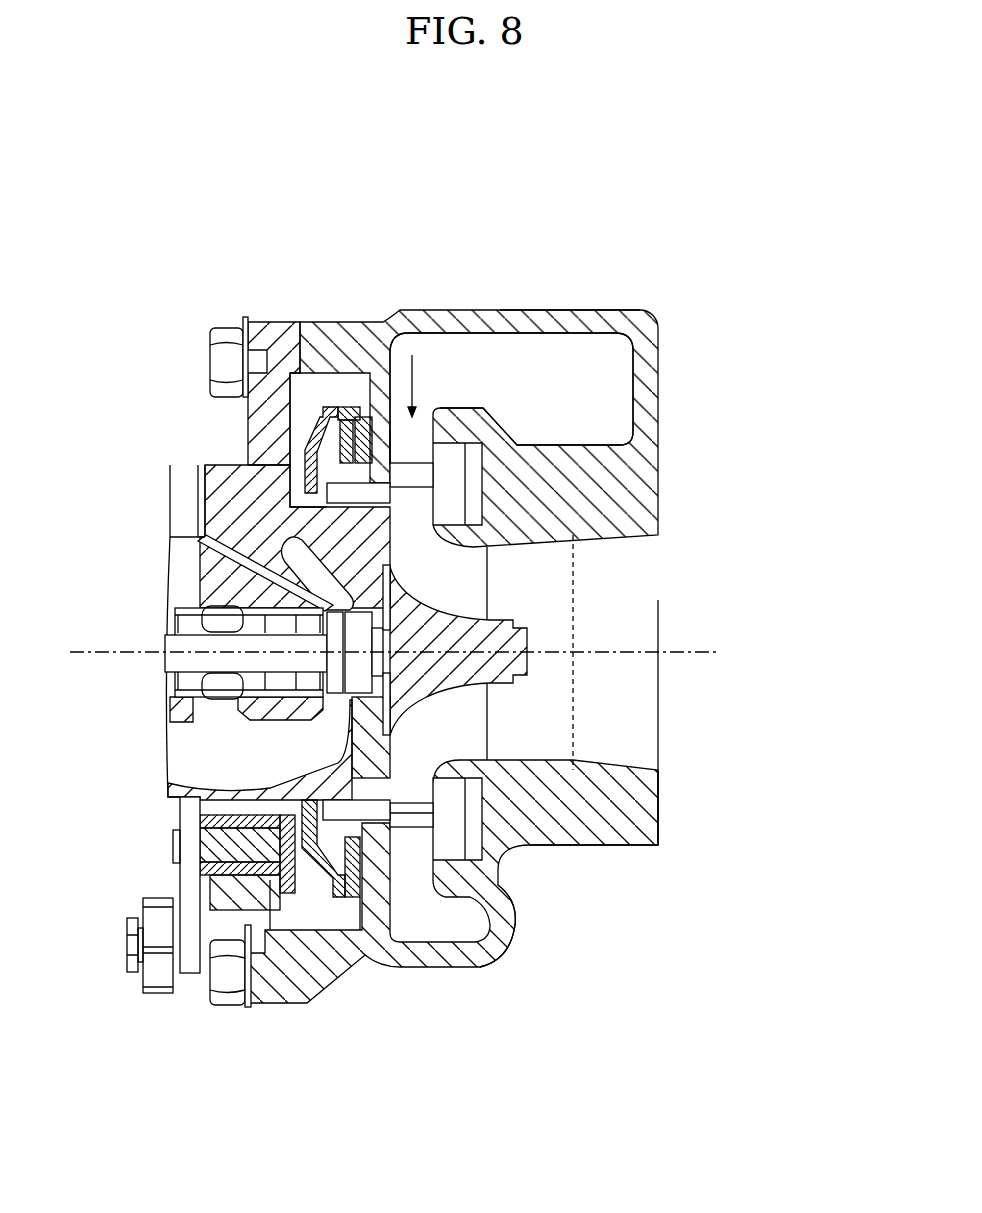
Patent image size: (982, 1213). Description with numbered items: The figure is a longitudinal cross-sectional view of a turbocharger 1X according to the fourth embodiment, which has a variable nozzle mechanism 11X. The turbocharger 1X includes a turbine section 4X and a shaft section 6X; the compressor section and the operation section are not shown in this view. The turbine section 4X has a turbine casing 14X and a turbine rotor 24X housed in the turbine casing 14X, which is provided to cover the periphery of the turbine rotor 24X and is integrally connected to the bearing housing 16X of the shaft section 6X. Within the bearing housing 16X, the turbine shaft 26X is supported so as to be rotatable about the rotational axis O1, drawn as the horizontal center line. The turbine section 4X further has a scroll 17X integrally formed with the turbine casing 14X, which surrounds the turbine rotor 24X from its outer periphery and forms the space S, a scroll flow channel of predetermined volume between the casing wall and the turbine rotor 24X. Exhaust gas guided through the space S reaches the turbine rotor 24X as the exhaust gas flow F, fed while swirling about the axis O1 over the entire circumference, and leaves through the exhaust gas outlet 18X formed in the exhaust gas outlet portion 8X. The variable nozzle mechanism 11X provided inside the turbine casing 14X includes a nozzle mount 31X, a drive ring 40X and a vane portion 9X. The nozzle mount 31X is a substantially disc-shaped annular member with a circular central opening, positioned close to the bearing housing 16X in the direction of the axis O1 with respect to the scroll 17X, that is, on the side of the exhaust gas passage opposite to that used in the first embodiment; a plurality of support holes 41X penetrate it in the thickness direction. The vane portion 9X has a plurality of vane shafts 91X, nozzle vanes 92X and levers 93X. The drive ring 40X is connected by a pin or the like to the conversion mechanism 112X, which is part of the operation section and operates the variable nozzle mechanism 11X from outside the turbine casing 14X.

The turbocharger 1X is at (675, 168).
The turbine section 4X is at (675, 277).
The turbine casing 14X is at (570, 316).
The space S is at (620, 385).
The nozzle vanes 92X is at (390, 447).
The nozzle mount 31X is at (416, 470).
The drive ring 40X is at (342, 403).
The support holes 41X is at (378, 485).
The levers 93X is at (303, 400).
The vane portion 9X is at (303, 426).
The bearing housing 16X is at (210, 454).
The vane shafts 91X is at (347, 496).
The turbine rotor 24X is at (465, 603).
The axis O1 is at (760, 650).
The exhaust gas outlet 18X is at (660, 705).
The exhaust gas outlet portion 8X is at (674, 751).
The scroll 17X is at (480, 968).
The turbine shaft 26X is at (228, 665).
The shaft section 6X is at (146, 820).
The conversion mechanism 112X is at (152, 996).
The variable nozzle mechanism 11X is at (328, 915).
The exhaust gas flow F is at (420, 385).